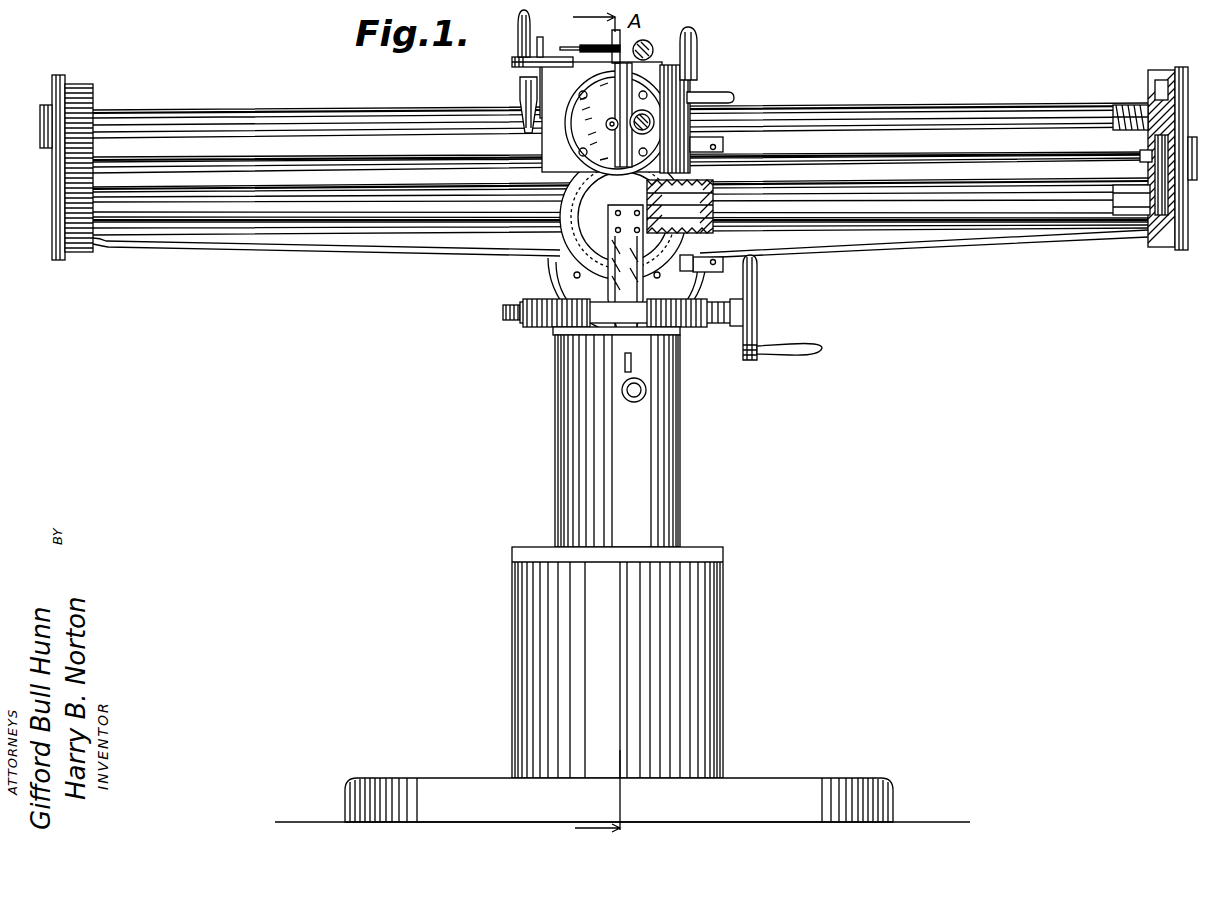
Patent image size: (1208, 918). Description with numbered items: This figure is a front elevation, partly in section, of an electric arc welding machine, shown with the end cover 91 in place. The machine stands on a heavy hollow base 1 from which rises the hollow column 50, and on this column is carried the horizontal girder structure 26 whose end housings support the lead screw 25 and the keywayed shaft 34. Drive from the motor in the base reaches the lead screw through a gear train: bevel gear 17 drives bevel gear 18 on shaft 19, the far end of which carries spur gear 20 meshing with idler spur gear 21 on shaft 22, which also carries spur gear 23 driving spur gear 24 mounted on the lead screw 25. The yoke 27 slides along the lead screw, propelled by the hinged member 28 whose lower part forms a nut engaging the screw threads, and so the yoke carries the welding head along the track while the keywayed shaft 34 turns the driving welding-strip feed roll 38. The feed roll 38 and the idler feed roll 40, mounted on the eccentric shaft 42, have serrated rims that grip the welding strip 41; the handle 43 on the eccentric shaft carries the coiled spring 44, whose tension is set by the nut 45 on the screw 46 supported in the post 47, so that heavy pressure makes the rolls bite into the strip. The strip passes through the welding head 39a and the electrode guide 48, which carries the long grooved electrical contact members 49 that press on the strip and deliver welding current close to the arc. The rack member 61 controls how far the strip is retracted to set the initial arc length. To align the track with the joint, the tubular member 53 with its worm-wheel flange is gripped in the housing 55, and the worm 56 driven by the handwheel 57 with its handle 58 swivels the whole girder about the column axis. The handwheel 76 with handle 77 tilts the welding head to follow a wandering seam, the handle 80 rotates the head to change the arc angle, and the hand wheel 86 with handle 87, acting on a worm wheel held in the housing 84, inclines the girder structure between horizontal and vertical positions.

The hollow base 1 is at (622, 689).
The bevel gear 17 is at (575, 188).
The bevel gear 18 is at (672, 232).
The shaft 19 is at (705, 222).
The spur gear 20 is at (1160, 246).
The idler spur gear 21 is at (1112, 195).
The shaft 22 is at (1148, 156).
The spur gear 23 is at (1168, 200).
The spur gear 24 is at (1170, 92).
The lead screw 25 is at (1128, 105).
The girder structure 26 is at (1016, 238).
The yoke 27 is at (612, 130).
The hinged member 28 is at (620, 38).
The keywayed shaft 34 is at (156, 116).
The driving welding-strip feed roll 38 is at (542, 140).
The welding head 39a is at (657, 112).
The idler feed roll 40 is at (735, 97).
The welding strip 41 is at (633, 364).
The eccentric shaft 42 is at (696, 150).
The handle 43 is at (698, 52).
The coiled spring 44 is at (660, 46).
The nut 45 is at (540, 40).
The screw 46 is at (584, 46).
The post 47 is at (522, 92).
The electrode guide 48 is at (612, 208).
The electrical contact members 49 is at (613, 323).
The hollow column 50 is at (681, 465).
The tubular member 53 is at (576, 289).
The housing 55 is at (503, 312).
The worm 56 is at (736, 320).
The handwheel 57 is at (758, 306).
The handle 58 is at (818, 345).
The rack member 61 is at (640, 393).
The handwheel 76 is at (512, 62).
The handle 77 is at (518, 30).
The handle 80 is at (545, 106).
The housing 84 is at (758, 266).
The hand wheel 86 is at (730, 103).
The handle 87 is at (683, 50).
The cover 91 is at (53, 238).